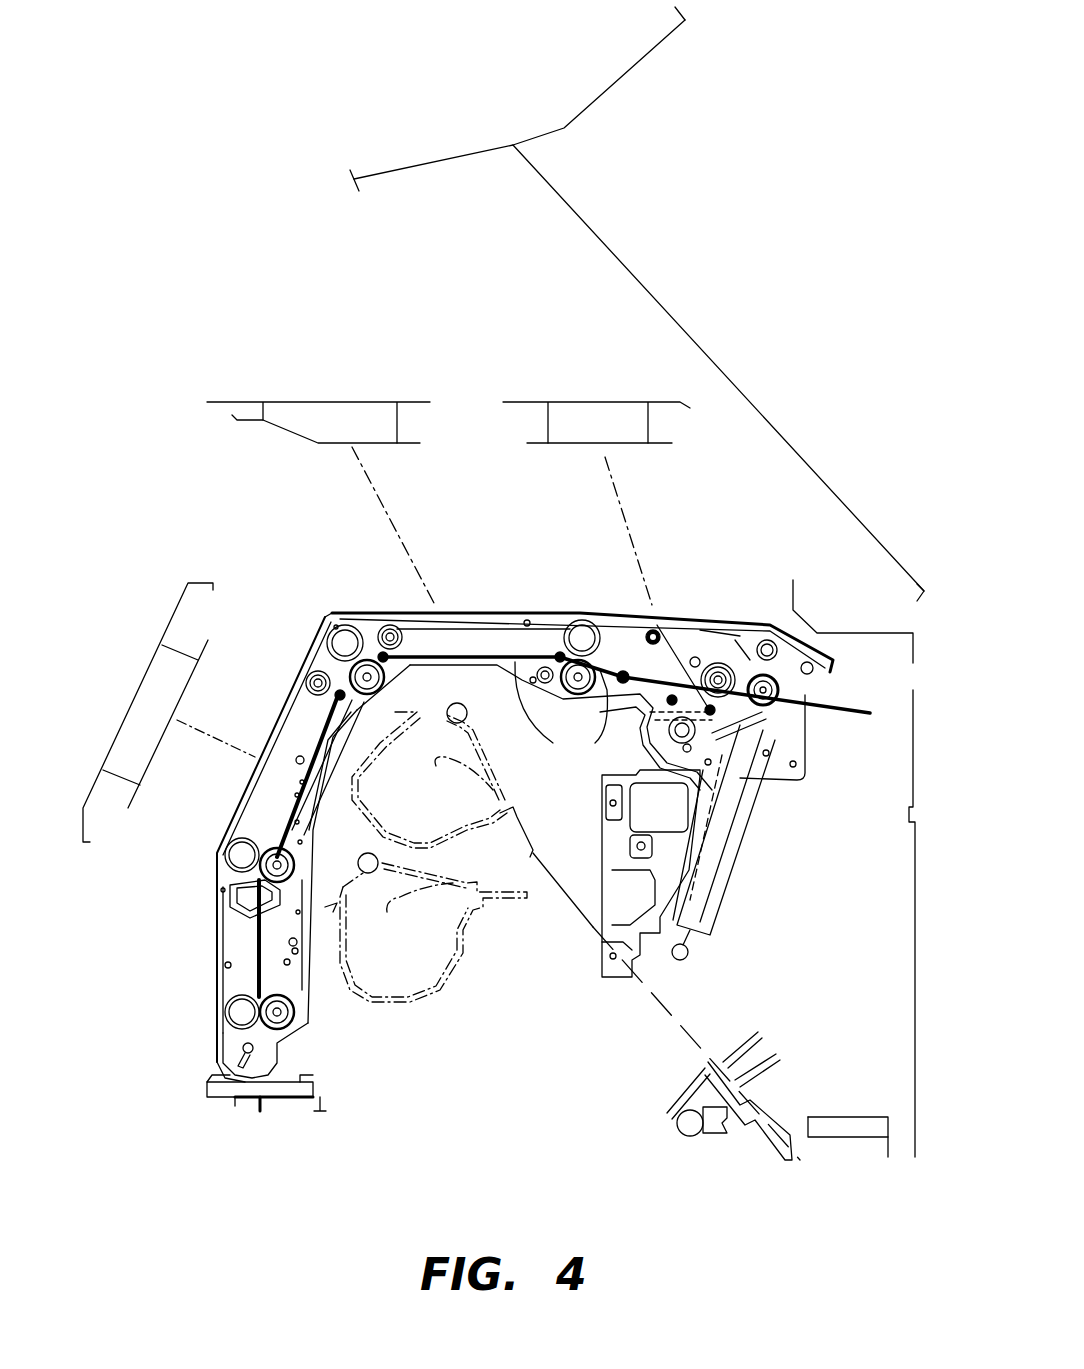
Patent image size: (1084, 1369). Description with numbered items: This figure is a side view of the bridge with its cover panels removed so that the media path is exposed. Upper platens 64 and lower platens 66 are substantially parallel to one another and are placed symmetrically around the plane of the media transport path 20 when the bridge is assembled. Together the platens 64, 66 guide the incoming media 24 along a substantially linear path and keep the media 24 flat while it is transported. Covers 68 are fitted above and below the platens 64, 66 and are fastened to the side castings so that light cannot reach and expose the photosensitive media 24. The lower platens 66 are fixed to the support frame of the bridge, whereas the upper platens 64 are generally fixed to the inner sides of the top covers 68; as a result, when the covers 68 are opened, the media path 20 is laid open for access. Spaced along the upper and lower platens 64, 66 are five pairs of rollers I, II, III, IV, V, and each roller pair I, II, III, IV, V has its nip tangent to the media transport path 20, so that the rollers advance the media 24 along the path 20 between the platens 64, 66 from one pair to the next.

The covers 68 is at (417, 402).
The upper platens 64 is at (295, 435).
The media transport path 20 is at (265, 837).
The media 24 is at (325, 713).
The lower platens 66 is at (267, 965).
The pair of rollers I is at (242, 1012).
The pair of rollers II is at (242, 855).
The pair of rollers III is at (345, 643).
The pair of rollers IV is at (582, 638).
The pair of rollers V is at (797, 694).